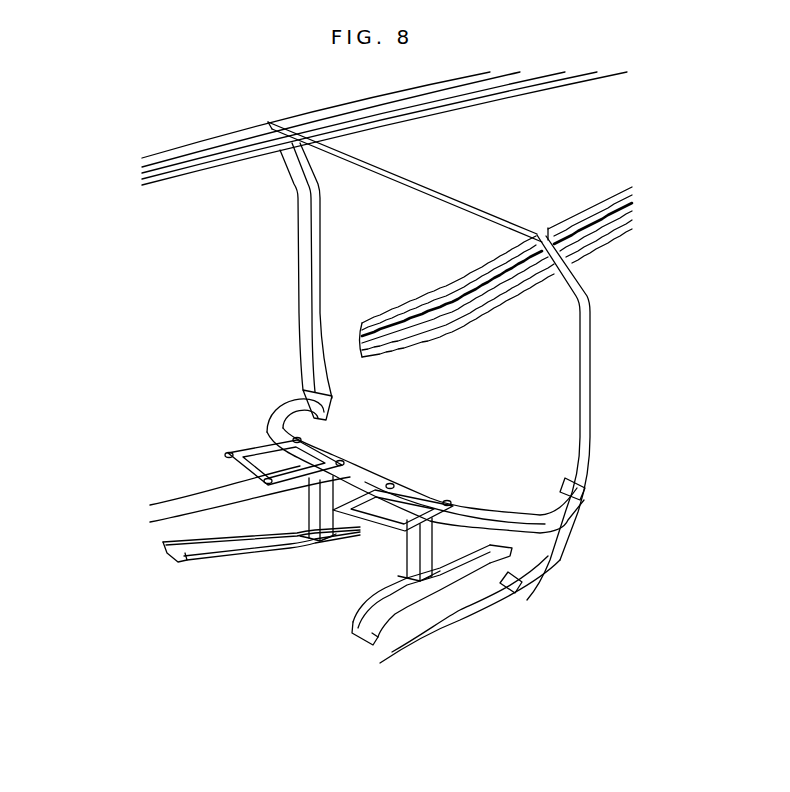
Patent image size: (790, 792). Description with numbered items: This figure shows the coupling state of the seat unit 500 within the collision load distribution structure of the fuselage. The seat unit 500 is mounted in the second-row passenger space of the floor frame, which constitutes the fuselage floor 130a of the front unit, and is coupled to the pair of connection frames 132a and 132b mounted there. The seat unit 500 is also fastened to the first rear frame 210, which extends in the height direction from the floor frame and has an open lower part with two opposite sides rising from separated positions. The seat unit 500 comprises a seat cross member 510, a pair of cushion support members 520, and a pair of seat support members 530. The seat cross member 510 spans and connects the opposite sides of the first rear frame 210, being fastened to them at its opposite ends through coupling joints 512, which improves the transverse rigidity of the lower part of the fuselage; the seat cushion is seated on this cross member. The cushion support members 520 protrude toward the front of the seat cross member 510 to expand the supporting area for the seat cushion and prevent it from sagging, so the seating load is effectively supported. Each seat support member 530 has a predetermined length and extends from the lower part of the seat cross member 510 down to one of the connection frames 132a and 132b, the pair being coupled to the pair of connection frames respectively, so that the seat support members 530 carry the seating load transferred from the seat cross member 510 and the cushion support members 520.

The fuselage floor 130a is at (423, 622).
The connection frame 132a is at (505, 556).
The connection frame 132b is at (185, 540).
The first rear frame 210 is at (583, 444).
The seat unit 500 is at (326, 483).
The seat cross member 510 is at (268, 416).
The coupling joint 512 is at (302, 392).
The cushion support member 520 is at (226, 453).
The seat support member 530 is at (455, 574).